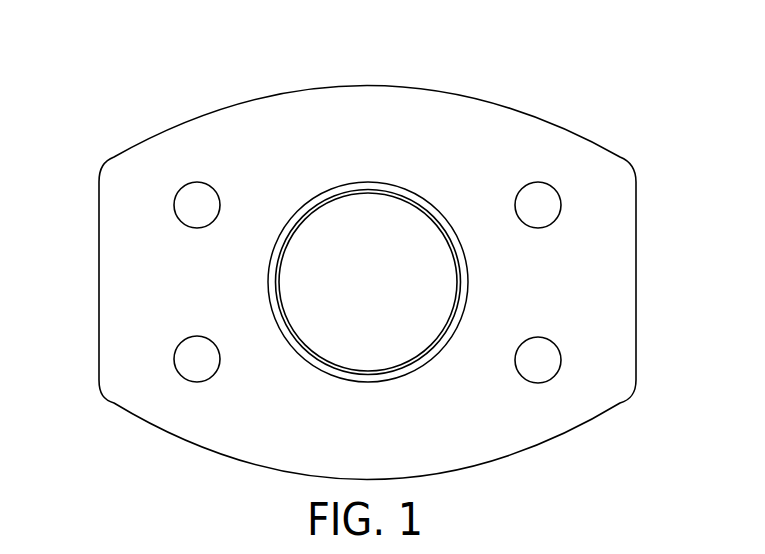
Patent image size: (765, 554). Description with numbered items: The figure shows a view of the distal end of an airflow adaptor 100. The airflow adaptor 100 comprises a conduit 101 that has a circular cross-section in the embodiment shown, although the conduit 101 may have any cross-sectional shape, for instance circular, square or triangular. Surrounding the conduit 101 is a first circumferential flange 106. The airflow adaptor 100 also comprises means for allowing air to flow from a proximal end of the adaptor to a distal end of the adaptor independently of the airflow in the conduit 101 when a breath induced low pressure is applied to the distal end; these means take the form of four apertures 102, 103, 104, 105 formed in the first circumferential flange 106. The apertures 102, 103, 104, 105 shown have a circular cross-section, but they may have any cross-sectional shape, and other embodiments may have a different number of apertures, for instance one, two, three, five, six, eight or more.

The airflow adaptor 100 is at (223, 68).
The conduit 101 is at (365, 192).
The aperture 102 is at (180, 190).
The aperture 103 is at (555, 189).
The aperture 104 is at (180, 375).
The aperture 105 is at (556, 374).
The first circumferential flange 106 is at (622, 272).